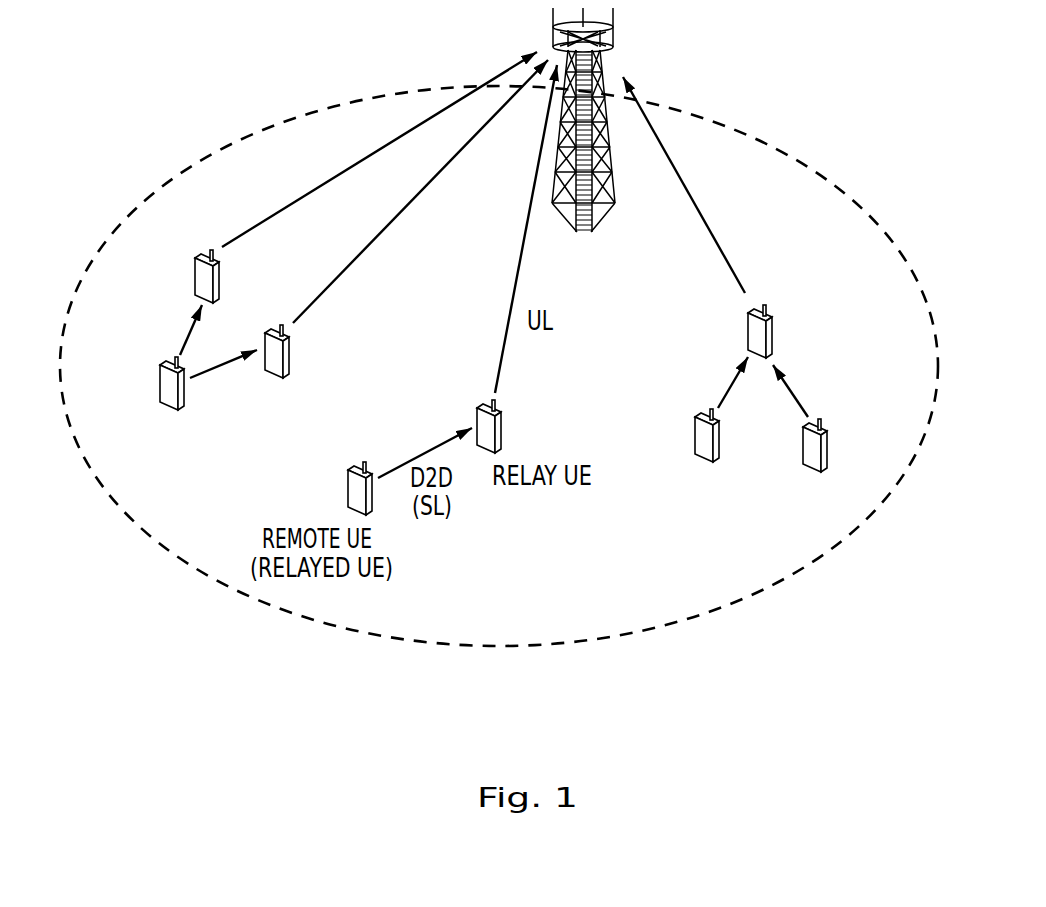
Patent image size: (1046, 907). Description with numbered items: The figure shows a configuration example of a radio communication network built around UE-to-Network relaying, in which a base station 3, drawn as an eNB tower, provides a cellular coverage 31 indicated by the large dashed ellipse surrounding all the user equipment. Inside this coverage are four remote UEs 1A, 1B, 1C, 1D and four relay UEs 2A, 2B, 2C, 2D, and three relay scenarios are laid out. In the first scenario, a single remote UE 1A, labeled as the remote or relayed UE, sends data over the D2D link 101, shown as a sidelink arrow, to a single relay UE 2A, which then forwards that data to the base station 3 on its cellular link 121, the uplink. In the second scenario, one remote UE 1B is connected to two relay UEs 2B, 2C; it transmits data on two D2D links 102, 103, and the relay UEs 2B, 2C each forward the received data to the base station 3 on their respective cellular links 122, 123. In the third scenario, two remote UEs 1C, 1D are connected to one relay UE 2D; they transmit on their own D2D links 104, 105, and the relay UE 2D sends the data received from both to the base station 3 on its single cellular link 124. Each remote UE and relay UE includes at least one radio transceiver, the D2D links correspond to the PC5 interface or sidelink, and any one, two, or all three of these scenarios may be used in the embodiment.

The base station 3 is at (610, 37).
The cellular coverage 31 is at (737, 128).
The remote UE 1A is at (348, 485).
The remote UE 1B is at (173, 407).
The remote UE 1C is at (695, 457).
The remote UE 1D is at (810, 467).
The relay UE 2A is at (502, 432).
The relay UE 2B is at (195, 270).
The relay UE 2C is at (293, 348).
The relay UE 2D is at (772, 322).
The D2D link 101 is at (428, 445).
The D2D link 102 is at (182, 333).
The D2D link 103 is at (220, 368).
The D2D link 104 is at (723, 388).
The D2D link 105 is at (800, 390).
The cellular link 121 is at (512, 283).
The cellular link 122 is at (317, 187).
The cellular link 123 is at (338, 275).
The cellular link 124 is at (702, 213).